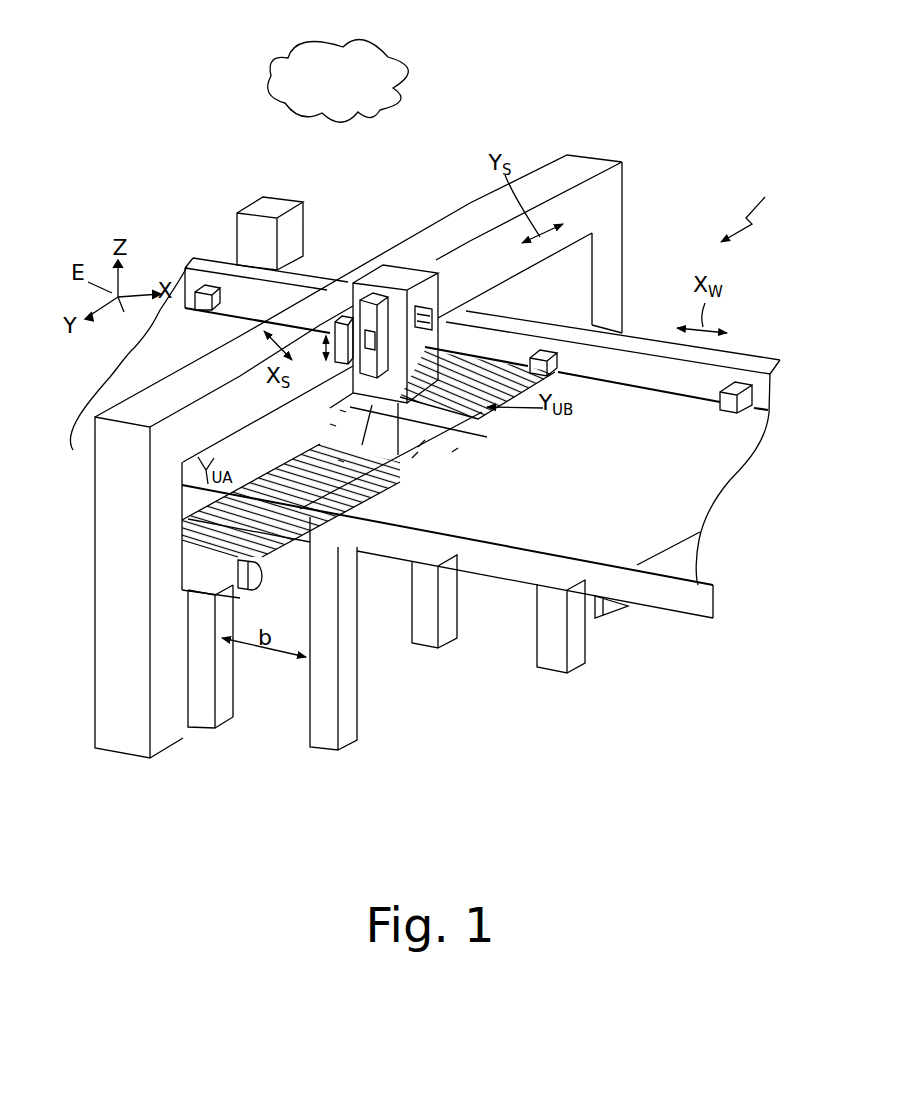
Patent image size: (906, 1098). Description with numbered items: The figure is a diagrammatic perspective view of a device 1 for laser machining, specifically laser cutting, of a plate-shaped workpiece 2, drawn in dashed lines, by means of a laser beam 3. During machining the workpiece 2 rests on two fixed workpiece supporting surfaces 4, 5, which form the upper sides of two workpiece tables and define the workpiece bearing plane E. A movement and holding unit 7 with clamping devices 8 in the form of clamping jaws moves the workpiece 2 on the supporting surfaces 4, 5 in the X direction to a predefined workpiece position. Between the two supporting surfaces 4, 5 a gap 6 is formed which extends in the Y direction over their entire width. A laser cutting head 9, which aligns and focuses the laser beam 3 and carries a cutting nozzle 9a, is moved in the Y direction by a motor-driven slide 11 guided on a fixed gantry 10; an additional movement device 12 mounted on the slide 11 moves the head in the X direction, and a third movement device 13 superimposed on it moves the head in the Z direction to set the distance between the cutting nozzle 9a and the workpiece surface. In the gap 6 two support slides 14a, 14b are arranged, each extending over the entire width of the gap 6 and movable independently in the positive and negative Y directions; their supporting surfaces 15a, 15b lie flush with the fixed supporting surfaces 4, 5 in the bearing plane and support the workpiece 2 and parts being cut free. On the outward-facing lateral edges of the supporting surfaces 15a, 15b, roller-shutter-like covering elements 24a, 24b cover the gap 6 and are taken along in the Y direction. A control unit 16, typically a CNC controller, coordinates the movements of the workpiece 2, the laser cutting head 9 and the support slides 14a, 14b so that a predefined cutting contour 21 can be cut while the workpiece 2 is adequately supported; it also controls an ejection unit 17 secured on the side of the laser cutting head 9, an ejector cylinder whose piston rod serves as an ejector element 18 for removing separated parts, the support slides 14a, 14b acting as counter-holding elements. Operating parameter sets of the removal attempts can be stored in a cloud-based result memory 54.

The device for laser machining 1 is at (752, 211).
The plate-shaped workpiece 2 is at (493, 550).
The laser beam 3 is at (418, 455).
The fixed workpiece supporting surface 4 is at (94, 472).
The fixed workpiece supporting surface 5 is at (670, 563).
The gap 6 is at (330, 424).
The movement and holding unit 7 is at (638, 372).
The clamping device 8 is at (745, 405).
The laser cutting head 9 is at (380, 300).
The cutting nozzle 9a is at (418, 447).
The fixed gantry 10 is at (172, 726).
The motor-driven slide 11 is at (342, 320).
The additional movement device 12 is at (440, 318).
The third movement device 13 is at (330, 318).
The support slide 14a is at (358, 497).
The support slide 14b is at (474, 434).
The supporting surface 15a is at (338, 460).
The supporting surface 15b is at (340, 410).
The control unit 16 is at (245, 237).
The ejection unit 17 is at (410, 306).
The ejector element 18 is at (405, 392).
The cutting contour 21 is at (458, 448).
The covering element 24a is at (200, 528).
The covering element 24b is at (500, 357).
The result memory 54 is at (393, 73).